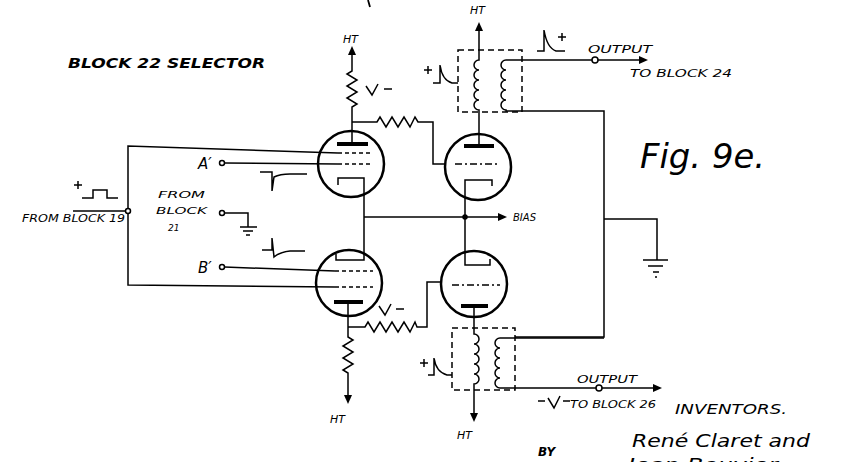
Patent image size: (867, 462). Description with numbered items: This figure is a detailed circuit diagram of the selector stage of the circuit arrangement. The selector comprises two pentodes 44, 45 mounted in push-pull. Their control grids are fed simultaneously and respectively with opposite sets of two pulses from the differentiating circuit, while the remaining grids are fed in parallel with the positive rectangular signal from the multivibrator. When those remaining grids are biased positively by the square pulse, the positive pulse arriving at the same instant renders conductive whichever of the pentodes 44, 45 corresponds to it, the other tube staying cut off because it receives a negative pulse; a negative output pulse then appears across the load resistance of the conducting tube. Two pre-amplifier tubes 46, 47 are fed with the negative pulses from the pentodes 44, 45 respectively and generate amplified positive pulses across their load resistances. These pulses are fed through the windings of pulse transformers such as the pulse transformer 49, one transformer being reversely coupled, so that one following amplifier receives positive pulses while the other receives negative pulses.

The pentode 44 is at (348, 168).
The pentode 45 is at (339, 272).
The pre-amplifier tube 46 is at (488, 174).
The pre-amplifier tube 47 is at (483, 267).
The pulse transformer 49 is at (528, 361).